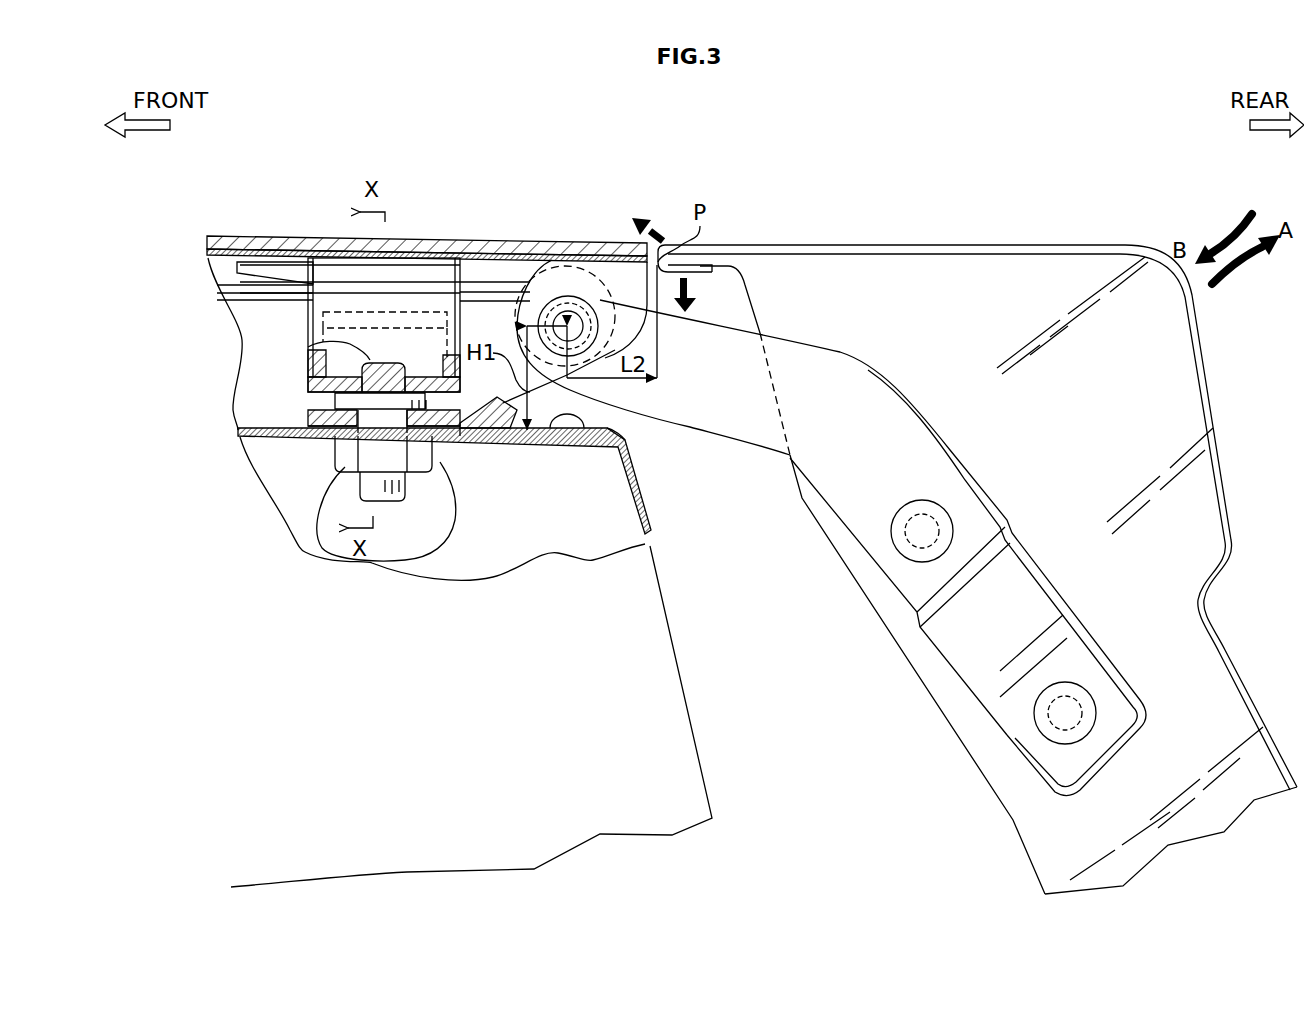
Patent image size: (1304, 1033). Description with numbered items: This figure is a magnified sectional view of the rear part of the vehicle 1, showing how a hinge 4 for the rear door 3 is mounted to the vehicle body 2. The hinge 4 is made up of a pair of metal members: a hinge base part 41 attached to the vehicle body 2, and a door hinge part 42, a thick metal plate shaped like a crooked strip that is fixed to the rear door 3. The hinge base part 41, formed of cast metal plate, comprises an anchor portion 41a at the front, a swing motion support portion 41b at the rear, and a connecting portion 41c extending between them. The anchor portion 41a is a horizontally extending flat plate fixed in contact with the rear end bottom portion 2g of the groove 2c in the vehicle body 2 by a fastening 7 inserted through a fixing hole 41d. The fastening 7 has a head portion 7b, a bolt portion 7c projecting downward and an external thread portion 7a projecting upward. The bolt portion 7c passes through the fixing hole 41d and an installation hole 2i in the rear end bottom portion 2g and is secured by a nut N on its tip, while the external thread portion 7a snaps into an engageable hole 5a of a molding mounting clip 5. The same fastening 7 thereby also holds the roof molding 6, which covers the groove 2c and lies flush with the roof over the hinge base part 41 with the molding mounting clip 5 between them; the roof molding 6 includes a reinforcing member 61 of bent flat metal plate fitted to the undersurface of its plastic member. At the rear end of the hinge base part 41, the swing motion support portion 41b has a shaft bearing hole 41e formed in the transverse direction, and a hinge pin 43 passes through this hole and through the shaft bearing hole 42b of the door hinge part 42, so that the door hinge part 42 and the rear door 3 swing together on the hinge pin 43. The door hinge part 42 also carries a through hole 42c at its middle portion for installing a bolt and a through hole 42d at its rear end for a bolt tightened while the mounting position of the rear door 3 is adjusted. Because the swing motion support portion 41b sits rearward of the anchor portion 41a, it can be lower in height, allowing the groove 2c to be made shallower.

The vehicle 1 is at (768, 158).
The vehicle body 2 is at (690, 668).
The groove 2c is at (238, 431).
The rear end bottom portion 2g is at (560, 437).
The installation hole 2i is at (305, 437).
The rear door 3 is at (1210, 352).
The hinge 4 is at (585, 408).
The molding mounting clip 5 is at (310, 335).
The engageable hole 5a is at (323, 330).
The roof molding 6 is at (233, 240).
The fastening 7 is at (365, 520).
The external thread portion 7a is at (388, 380).
The head portion 7b is at (330, 395).
The bolt portion 7c is at (400, 492).
The hinge base part 41 is at (320, 418).
The anchor portion 41a is at (345, 455).
The swing motion support portion 41b is at (610, 255).
The connecting portion 41c is at (512, 430).
The fixing hole 41d is at (448, 520).
The shaft bearing hole 41e is at (548, 290).
The door hinge part 42 is at (833, 390).
The shaft bearing hole 42b is at (565, 240).
The through hole 42c is at (905, 542).
The through hole 42d is at (1050, 712).
The hinge pin 43 is at (486, 250).
The reinforcing member 61 is at (237, 266).
The nut N is at (340, 468).